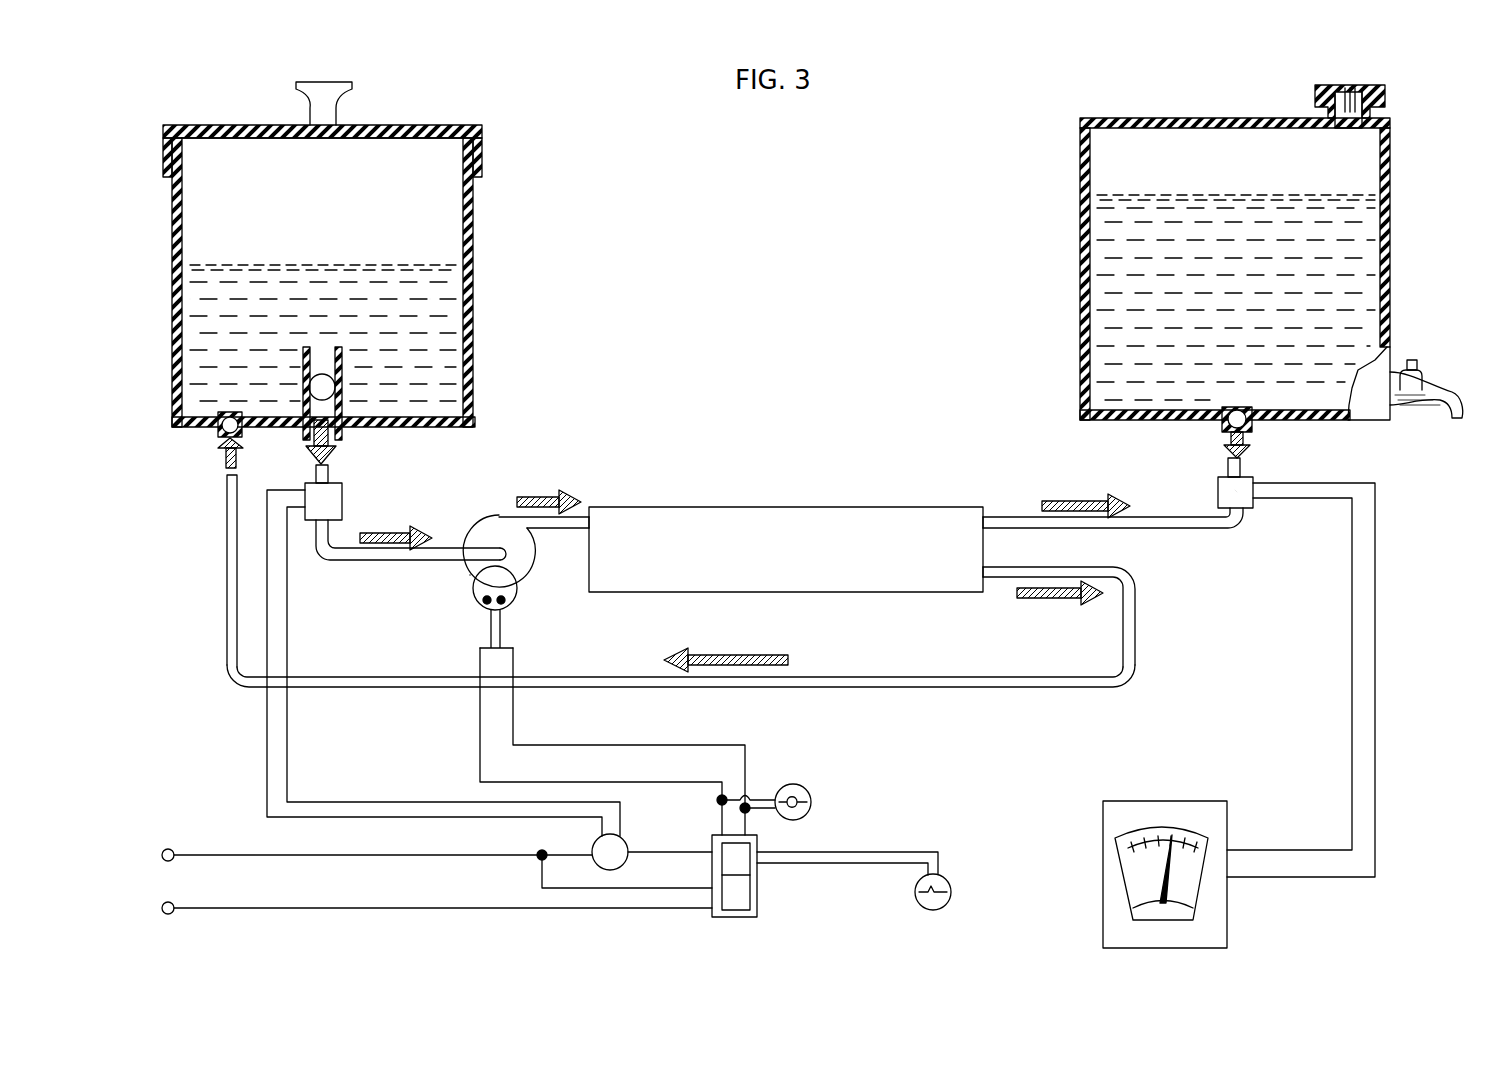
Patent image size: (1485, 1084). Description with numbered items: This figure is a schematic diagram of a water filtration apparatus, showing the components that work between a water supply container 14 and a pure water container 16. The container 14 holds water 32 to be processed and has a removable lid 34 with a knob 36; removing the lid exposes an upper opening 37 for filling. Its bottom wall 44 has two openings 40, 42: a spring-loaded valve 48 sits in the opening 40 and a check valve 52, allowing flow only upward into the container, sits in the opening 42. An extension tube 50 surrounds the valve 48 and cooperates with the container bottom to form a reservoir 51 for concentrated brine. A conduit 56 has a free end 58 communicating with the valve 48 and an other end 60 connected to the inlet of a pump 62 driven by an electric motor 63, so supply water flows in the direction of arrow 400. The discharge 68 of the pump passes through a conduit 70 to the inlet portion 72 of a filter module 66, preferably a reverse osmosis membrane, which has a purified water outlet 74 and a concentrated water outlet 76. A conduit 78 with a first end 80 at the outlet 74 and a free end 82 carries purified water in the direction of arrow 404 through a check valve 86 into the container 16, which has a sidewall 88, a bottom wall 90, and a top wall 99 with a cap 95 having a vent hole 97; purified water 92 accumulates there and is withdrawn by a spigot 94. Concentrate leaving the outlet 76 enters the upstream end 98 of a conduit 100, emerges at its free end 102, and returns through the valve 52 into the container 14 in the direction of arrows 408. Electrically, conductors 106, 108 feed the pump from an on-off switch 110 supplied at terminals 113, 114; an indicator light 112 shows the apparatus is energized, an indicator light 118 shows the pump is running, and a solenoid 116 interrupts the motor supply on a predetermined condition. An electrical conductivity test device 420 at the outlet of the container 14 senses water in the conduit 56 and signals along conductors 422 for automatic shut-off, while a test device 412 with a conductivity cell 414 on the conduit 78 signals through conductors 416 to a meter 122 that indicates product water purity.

The water supply container 14 is at (480, 190).
The pure water container 16 is at (1082, 180).
The water 32 is at (228, 280).
The removable lid 34 is at (478, 127).
The knob 36 is at (330, 94).
The upper opening 37 is at (225, 142).
The opening 40 is at (340, 432).
The opening 42 is at (218, 432).
The bottom wall 44 is at (426, 420).
The spring-loaded valve 48 is at (342, 400).
The extension tube 50 is at (343, 360).
The reservoir 51 is at (450, 372).
The check valve 52 is at (232, 408).
The conduit 56 is at (342, 558).
The free end 58 is at (330, 473).
The other end 60 is at (473, 576).
The pump 62 is at (485, 520).
The electric motor 63 is at (518, 592).
The filter module 66 is at (771, 493).
The discharge 68 is at (528, 492).
The conduit 70 is at (562, 530).
The inlet portion 72 is at (590, 505).
The purified water outlet 74 is at (988, 515).
The concentrated water outlet 76 is at (986, 592).
The conduit 78 is at (1165, 530).
The first end 80 is at (1005, 527).
The free end 82 is at (1240, 468).
The check valve 86 is at (1240, 405).
The sidewall 88 is at (1390, 268).
The bottom wall 90 is at (1118, 412).
The purified water 92 is at (1188, 195).
The spigot 94 is at (1428, 388).
The cap 95 is at (1385, 95).
The vent hole 97 is at (1352, 88).
The upstream end 98 is at (1000, 572).
The top wall 99 is at (1176, 125).
The conduit 100 is at (1136, 632).
The free end 102 is at (226, 492).
The conductor 106 is at (480, 662).
The conductor 108 is at (515, 706).
The on-off switch 110 is at (752, 898).
The indicator light 112 is at (803, 786).
The terminal 113 is at (170, 848).
The terminal 114 is at (174, 904).
The solenoid 116 is at (624, 840).
The indicator light 118 is at (948, 878).
The meter 122 is at (1229, 920).
The arrow 400 is at (372, 514).
The arrow 404 is at (1088, 505).
The arrows 408 is at (1045, 600).
The test device 412 is at (1273, 483).
The conductivity cell 414 is at (1242, 497).
The conductors 416 is at (1378, 552).
The electrical conductivity test device 420 is at (340, 500).
The conductors 422 is at (268, 650).